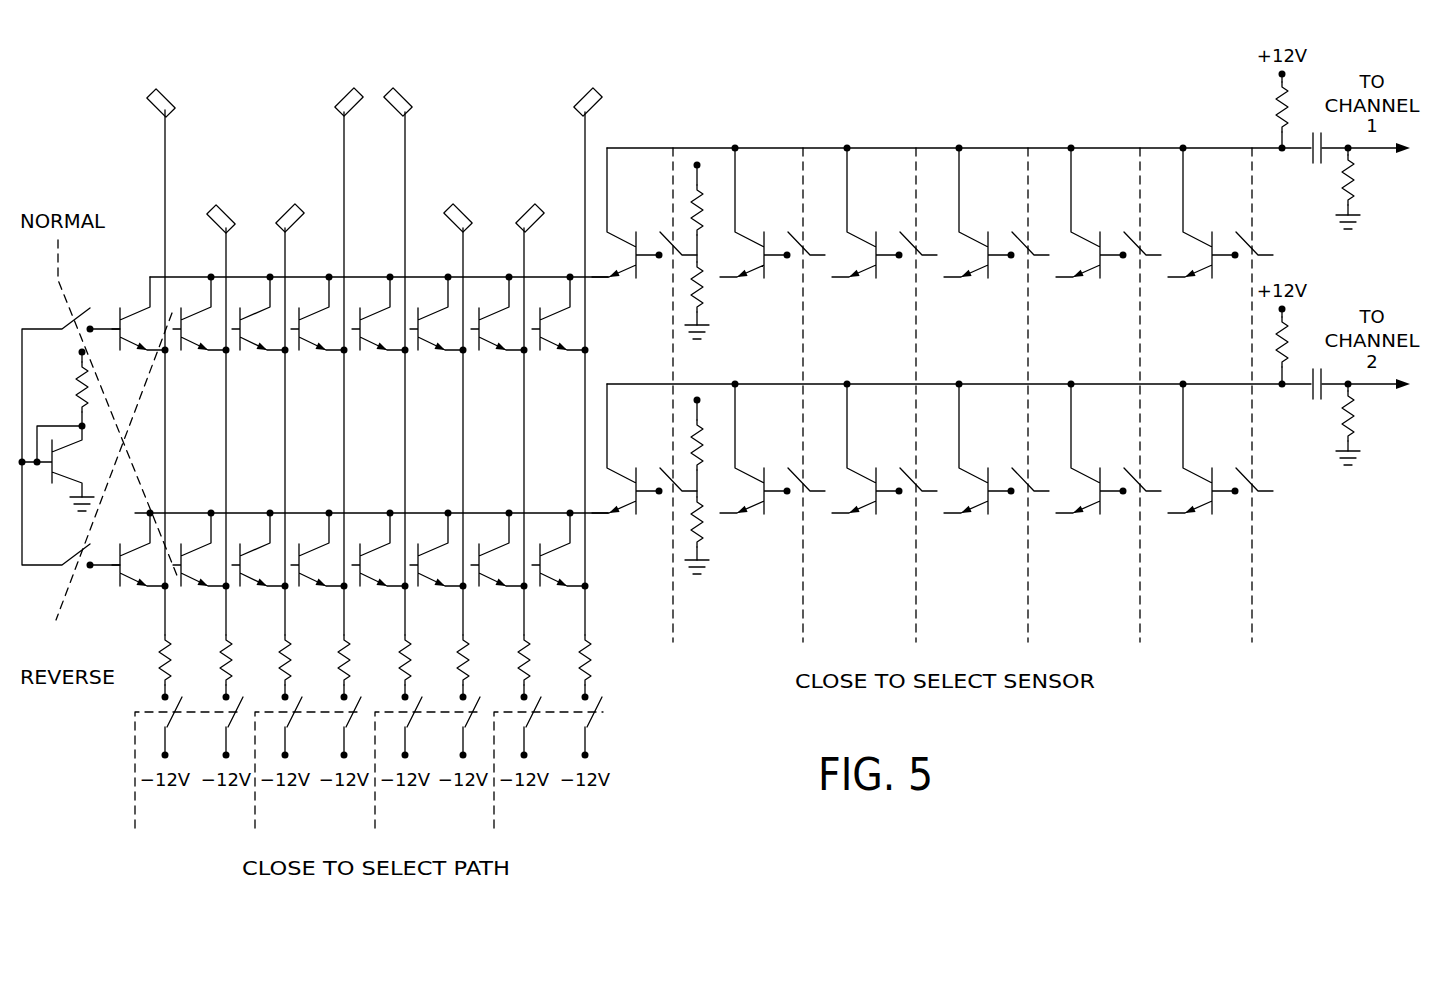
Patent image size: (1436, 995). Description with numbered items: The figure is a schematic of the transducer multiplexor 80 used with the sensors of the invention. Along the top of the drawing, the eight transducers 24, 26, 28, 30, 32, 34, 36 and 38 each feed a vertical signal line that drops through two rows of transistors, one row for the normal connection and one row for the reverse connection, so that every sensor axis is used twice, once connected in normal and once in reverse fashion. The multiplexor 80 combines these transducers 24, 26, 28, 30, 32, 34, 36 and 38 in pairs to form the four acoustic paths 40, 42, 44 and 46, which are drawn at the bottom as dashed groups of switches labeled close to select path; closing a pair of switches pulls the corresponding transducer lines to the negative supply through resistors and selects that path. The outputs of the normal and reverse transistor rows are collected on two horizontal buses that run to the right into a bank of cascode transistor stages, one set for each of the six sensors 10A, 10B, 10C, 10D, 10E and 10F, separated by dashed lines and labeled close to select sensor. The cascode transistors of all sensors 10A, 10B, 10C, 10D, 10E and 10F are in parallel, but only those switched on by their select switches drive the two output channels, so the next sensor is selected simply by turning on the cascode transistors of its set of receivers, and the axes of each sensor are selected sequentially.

The transducer multiplexor 80 is at (156, 68).
The transducer 24 is at (169, 94).
The transducer 26 is at (221, 208).
The transducer 28 is at (293, 208).
The transducer 30 is at (350, 86).
The transducer 32 is at (393, 86).
The transducer 34 is at (456, 207).
The transducer 36 is at (535, 207).
The transducer 38 is at (595, 92).
The acoustic path 40 is at (193, 738).
The acoustic path 42 is at (312, 738).
The acoustic path 44 is at (432, 738).
The acoustic path 46 is at (552, 738).
The sensor 10A is at (657, 397).
The sensor 10B is at (781, 396).
The sensor 10C is at (893, 396).
The sensor 10D is at (1011, 396).
The sensor 10E is at (1118, 396).
The sensor 10F is at (1229, 396).